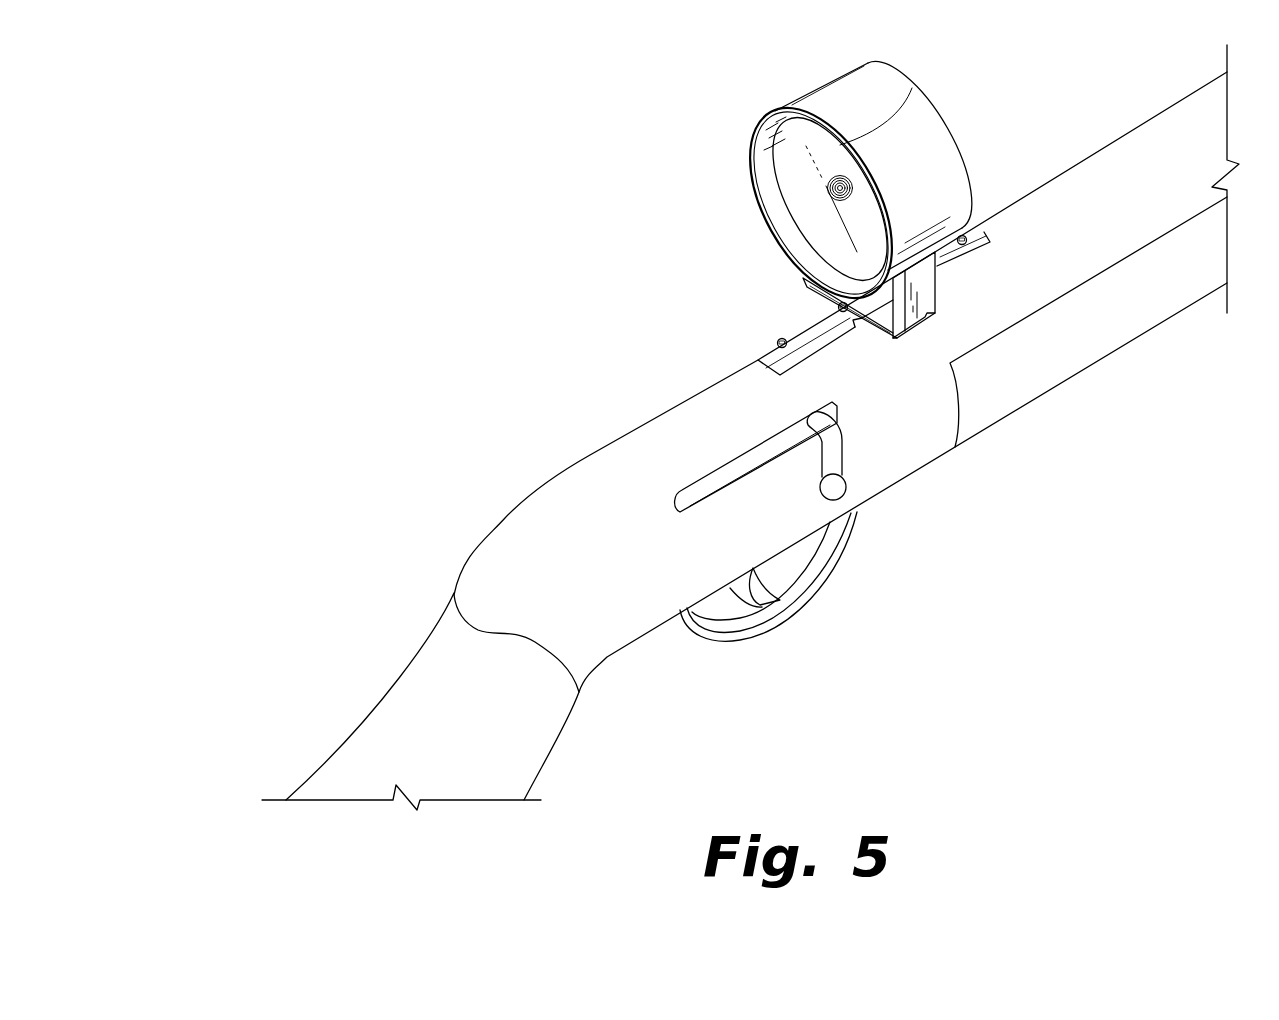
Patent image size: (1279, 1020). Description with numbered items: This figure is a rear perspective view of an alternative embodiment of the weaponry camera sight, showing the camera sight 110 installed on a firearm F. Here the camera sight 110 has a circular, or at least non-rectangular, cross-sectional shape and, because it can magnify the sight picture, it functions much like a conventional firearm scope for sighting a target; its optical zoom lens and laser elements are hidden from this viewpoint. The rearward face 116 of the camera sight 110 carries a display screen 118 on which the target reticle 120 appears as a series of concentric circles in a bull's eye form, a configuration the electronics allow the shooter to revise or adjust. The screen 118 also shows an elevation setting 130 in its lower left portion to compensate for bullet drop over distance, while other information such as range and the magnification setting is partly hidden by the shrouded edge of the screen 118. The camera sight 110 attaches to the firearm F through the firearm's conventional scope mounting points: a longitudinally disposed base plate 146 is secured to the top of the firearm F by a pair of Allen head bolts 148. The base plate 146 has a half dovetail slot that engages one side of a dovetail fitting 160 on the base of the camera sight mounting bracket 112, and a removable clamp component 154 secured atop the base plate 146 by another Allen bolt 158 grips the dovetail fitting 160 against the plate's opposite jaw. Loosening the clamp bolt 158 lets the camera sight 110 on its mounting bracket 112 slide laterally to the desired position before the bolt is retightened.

The camera sight 110 is at (734, 165).
The camera sight mounting bracket 112 is at (925, 290).
The rearward face 116 is at (783, 148).
The display screen 118 is at (773, 112).
The target reticle 120 is at (913, 86).
The elevation setting 130 is at (783, 221).
The base plate 146 is at (797, 318).
The Allen head bolts 148 is at (778, 342).
The clamp component 154 is at (860, 327).
The Allen bolt 158 is at (801, 280).
The dovetail fitting 160 is at (903, 329).
The firearm F is at (447, 431).